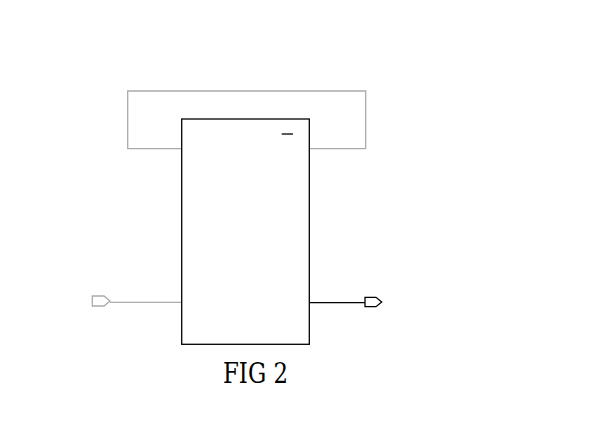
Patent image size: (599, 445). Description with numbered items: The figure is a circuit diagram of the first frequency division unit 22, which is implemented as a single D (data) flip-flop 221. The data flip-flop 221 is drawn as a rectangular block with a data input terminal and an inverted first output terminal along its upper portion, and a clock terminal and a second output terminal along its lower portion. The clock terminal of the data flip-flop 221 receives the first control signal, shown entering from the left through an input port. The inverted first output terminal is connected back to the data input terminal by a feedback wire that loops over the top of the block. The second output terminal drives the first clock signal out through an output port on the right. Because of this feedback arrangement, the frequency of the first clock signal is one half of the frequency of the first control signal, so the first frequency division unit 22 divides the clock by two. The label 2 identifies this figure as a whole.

The flip-flop circuit of FIG. 2 is at (245, 183).
The first frequency division unit 22 is at (237, 48).
The data flip-flop 221 is at (309, 233).